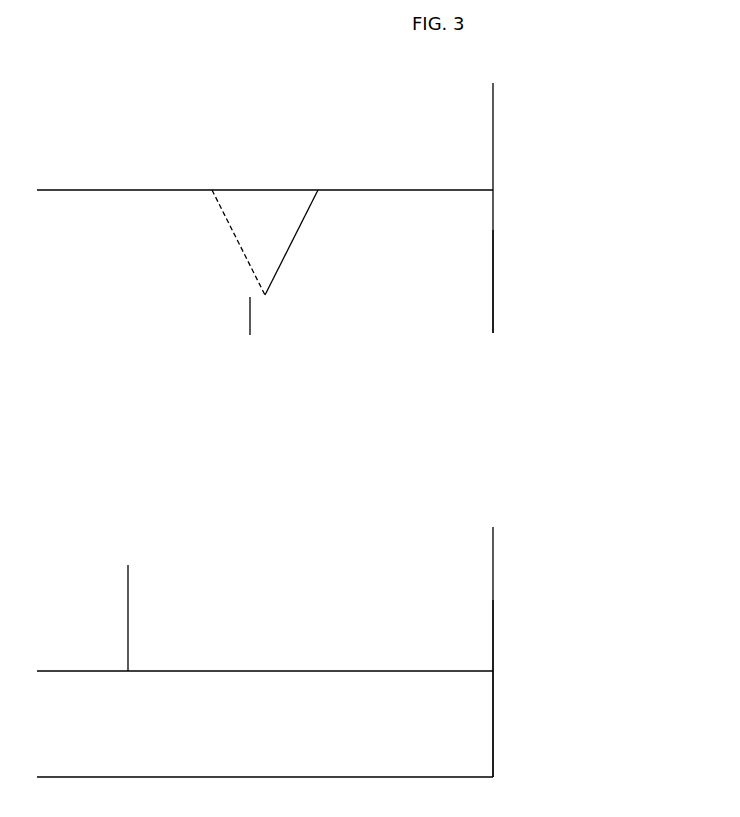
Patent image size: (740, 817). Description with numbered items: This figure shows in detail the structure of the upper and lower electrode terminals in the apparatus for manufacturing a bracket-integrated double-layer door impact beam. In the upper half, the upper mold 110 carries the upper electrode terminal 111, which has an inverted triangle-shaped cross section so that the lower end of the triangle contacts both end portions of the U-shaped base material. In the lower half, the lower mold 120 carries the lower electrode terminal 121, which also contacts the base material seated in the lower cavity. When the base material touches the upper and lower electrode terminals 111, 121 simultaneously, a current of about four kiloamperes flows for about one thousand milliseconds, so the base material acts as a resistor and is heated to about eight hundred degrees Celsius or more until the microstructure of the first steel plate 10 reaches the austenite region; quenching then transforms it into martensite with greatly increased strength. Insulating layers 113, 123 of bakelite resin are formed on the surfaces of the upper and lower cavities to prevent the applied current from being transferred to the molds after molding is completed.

The first steel plate 10 is at (478, 314).
The upper mold 110 is at (468, 122).
The upper electrode terminal 111 is at (277, 236).
The insulating layer 113 is at (472, 249).
The lower mold 120 is at (473, 709).
The lower electrode terminal 121 is at (355, 617).
The insulating layer 123 is at (466, 627).